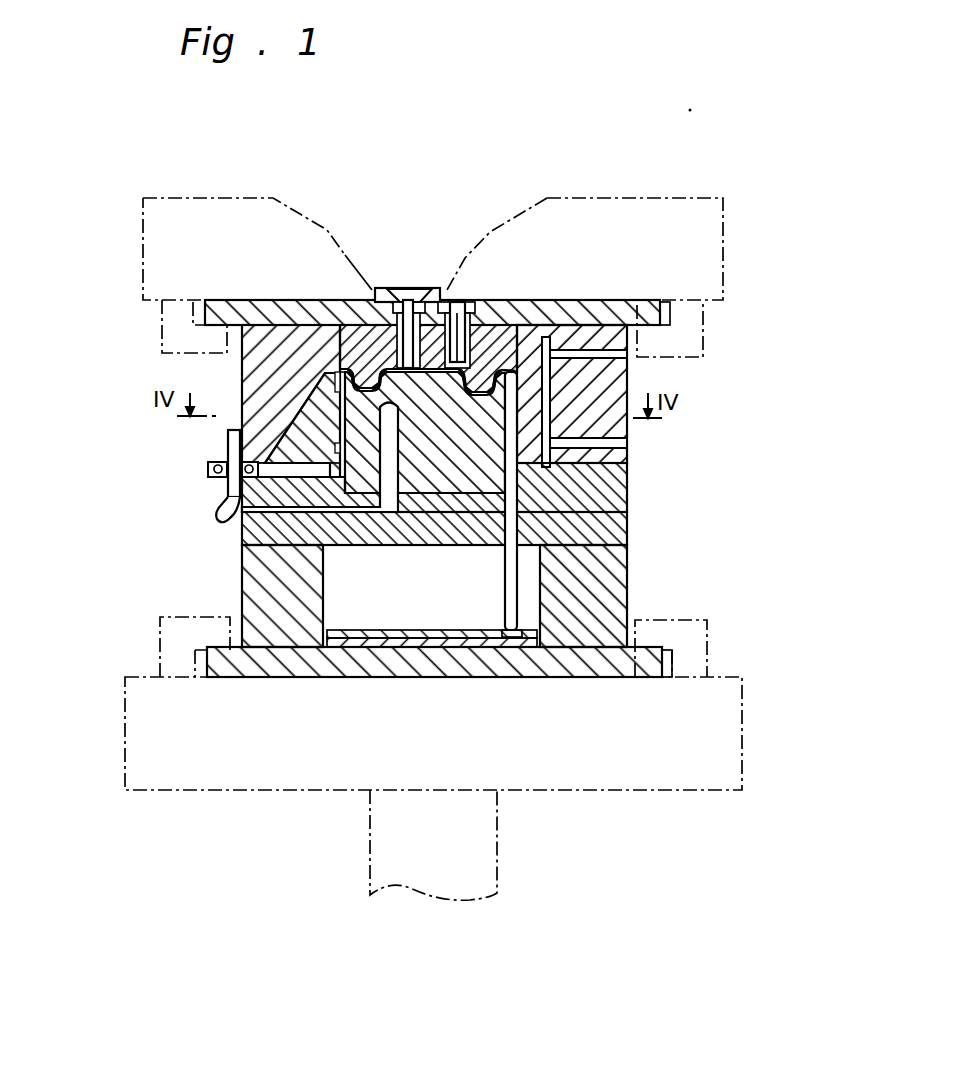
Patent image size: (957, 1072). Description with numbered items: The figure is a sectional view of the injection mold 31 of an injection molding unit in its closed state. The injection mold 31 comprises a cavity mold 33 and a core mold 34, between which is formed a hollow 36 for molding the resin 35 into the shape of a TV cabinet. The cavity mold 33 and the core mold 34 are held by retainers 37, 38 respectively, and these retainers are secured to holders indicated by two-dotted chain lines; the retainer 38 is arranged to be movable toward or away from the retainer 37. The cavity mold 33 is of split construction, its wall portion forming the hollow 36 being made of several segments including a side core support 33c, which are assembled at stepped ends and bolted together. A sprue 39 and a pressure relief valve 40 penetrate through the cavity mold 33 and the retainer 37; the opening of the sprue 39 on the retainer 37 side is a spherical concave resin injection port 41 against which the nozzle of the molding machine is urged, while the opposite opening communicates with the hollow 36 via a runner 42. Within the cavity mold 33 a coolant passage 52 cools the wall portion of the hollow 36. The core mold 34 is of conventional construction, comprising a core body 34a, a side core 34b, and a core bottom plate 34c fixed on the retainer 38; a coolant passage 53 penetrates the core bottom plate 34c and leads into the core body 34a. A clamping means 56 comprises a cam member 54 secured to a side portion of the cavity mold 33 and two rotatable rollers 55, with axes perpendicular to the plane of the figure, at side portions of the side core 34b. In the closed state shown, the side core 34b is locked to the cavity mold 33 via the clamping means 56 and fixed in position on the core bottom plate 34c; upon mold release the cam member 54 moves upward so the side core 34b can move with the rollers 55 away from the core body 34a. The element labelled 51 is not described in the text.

The injection mold 31 is at (650, 437).
The cavity mold 33 is at (620, 370).
The side core support 33c is at (240, 345).
The core mold 34 is at (627, 497).
The core body 34a is at (627, 530).
The side core 34b is at (243, 420).
The core bottom plate 34c is at (427, 532).
The resin 35 is at (320, 403).
The hollow 36 is at (195, 417).
The retainer 37 is at (650, 317).
The retainer 38 is at (612, 567).
The sprue 39 is at (437, 288).
The pressure relief valve 40 is at (467, 290).
The resin injection port 41 is at (400, 288).
The runner 42 is at (348, 328).
The ejector pin 51 is at (510, 320).
The coolant passage 52 is at (620, 362).
The coolant passage 53 is at (243, 527).
The cam member 54 is at (218, 507).
The rollers 55 is at (228, 484).
The clamping means 56 is at (197, 470).